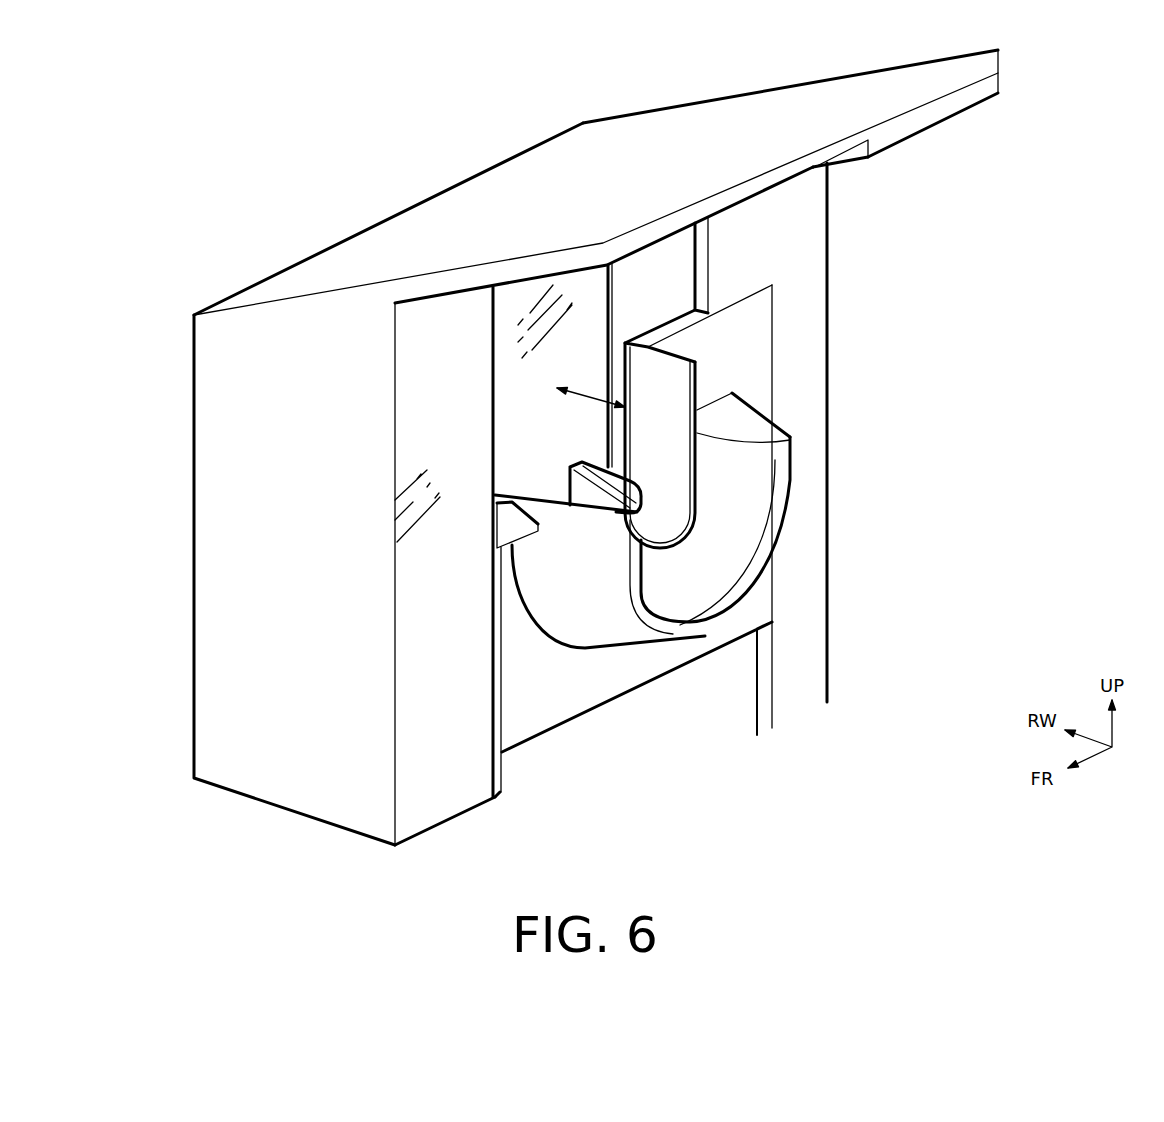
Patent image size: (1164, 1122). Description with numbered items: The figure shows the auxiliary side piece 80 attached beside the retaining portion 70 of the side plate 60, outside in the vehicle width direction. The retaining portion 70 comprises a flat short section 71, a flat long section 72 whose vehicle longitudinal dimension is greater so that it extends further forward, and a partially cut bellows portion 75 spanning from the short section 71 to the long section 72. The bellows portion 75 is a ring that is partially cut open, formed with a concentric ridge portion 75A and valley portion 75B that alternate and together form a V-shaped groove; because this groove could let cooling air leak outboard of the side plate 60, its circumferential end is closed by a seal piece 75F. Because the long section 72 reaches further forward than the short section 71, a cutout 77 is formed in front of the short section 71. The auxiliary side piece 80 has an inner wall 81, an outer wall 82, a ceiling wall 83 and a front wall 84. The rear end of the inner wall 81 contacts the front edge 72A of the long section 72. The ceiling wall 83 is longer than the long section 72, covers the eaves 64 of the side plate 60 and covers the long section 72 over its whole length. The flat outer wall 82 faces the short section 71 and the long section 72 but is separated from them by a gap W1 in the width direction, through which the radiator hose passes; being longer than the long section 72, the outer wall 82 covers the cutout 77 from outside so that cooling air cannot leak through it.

The side plate 60 is at (830, 640).
The eaves 64 is at (943, 110).
The retaining portion 70 is at (660, 675).
The short section 71 is at (740, 323).
The long section 72 is at (535, 700).
The front edge of the long section 72A is at (493, 668).
The partially cut bellows portion 75 is at (790, 502).
The ridge portion 75A is at (777, 547).
The valley portion 75B is at (582, 460).
The seal piece 75F is at (773, 430).
The cutout 77 is at (543, 425).
The auxiliary side piece 80 is at (357, 232).
The inner wall 81 is at (442, 780).
The outer wall 82 is at (513, 303).
The ceiling wall 83 is at (670, 125).
The front wall 84 is at (233, 667).
The gap W1 is at (591, 384).